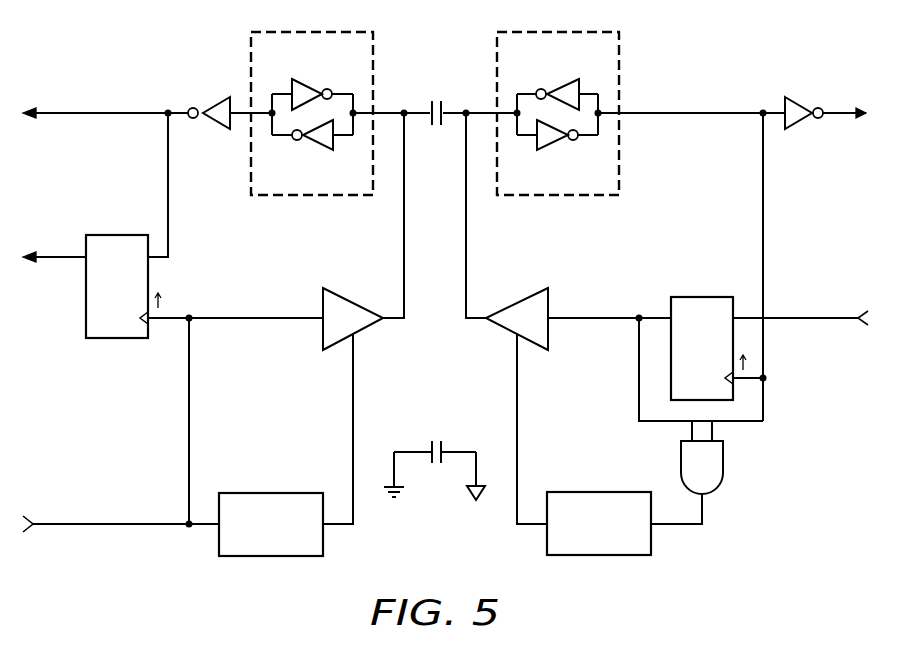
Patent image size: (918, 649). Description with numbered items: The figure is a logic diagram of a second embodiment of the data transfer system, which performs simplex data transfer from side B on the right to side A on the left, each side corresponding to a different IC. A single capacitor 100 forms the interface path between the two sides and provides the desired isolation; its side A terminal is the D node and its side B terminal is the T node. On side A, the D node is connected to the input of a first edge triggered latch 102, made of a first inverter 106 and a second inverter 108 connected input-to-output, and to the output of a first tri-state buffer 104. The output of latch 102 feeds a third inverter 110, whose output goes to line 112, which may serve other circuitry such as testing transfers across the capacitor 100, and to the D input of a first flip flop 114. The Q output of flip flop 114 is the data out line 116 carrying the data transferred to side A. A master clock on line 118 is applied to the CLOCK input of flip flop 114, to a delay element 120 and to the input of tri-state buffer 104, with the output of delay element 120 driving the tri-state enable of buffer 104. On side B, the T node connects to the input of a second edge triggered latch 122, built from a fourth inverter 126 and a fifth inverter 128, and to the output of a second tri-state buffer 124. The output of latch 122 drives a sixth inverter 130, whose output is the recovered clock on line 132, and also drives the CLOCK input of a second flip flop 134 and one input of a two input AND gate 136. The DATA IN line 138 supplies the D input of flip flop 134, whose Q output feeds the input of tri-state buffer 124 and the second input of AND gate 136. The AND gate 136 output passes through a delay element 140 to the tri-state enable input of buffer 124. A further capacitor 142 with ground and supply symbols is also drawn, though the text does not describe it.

The capacitor 100 is at (437, 128).
The first edge triggered latch 102 is at (280, 99).
The first tri-state buffer 104 is at (322, 307).
The first inverter 106 is at (308, 82).
The second inverter 108 is at (312, 148).
The third inverter 110 is at (216, 128).
The line 112 is at (108, 112).
The first flip flop 114 is at (118, 233).
The data out line 116 is at (63, 260).
The line 118 is at (120, 528).
The delay element 120 is at (275, 490).
The second edge triggered latch 122 is at (590, 99).
The second tri-state buffer 124 is at (550, 307).
The fourth inverter 126 is at (562, 82).
The fifth inverter 128 is at (558, 148).
The sixth inverter 130 is at (800, 102).
The line 132 is at (840, 118).
The second flip flop 134 is at (703, 297).
The two input AND gate 136 is at (725, 462).
The DATA IN line 138 is at (817, 324).
The delay element 140 is at (597, 490).
The capacitor 142 is at (435, 438).